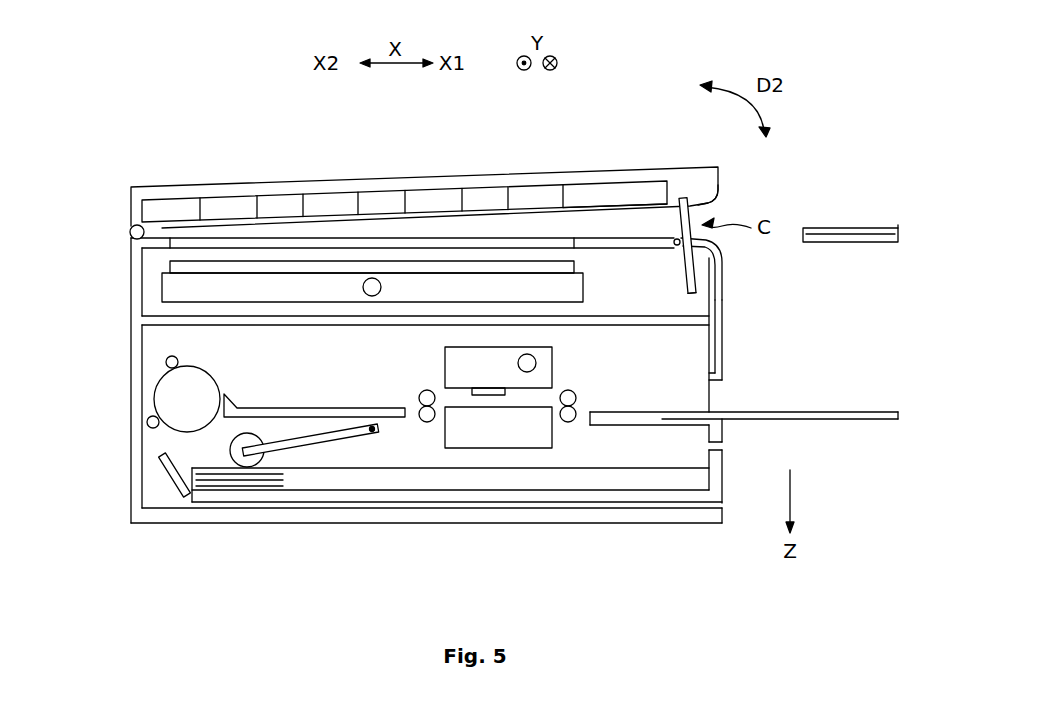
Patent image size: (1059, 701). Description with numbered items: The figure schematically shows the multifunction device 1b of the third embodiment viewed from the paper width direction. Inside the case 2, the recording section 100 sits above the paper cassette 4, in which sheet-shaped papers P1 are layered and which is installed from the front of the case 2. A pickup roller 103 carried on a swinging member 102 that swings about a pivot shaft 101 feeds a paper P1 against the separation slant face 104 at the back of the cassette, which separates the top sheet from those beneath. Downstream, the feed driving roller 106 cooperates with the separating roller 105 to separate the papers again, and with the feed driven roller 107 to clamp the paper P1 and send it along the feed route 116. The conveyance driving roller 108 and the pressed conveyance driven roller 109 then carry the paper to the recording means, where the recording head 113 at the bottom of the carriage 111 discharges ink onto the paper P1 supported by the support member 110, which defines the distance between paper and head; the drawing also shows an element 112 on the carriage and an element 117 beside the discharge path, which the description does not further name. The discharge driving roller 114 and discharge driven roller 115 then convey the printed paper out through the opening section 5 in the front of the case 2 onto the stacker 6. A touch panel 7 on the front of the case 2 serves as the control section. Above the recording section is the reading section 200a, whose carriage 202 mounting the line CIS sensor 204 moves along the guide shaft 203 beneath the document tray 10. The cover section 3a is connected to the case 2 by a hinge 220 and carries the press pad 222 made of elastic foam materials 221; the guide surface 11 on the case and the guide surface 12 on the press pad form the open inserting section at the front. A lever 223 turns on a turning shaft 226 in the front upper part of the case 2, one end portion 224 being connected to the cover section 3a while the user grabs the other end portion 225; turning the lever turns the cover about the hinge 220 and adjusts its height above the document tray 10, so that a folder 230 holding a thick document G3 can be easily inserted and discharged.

The multifunction device 1b is at (631, 88).
The case 2 is at (140, 519).
The cover section 3a is at (193, 190).
The paper cassette 4 is at (678, 509).
The opening section 5 is at (715, 386).
The stacker 6 is at (853, 411).
The touch panel 7 is at (718, 337).
The document tray 10 is at (387, 247).
The guide surface 11 is at (710, 248).
The guide surface 12 is at (708, 200).
The recording section 100 is at (98, 322).
The pivot shaft 101 is at (370, 433).
The swinging member 102 is at (308, 445).
The pickup roller 103 is at (245, 464).
The separation slant face 104 is at (175, 485).
The separating roller 105 is at (155, 428).
The feed driving roller 106 is at (207, 392).
The feed driven roller 107 is at (177, 358).
The conveyance driving roller 108 is at (425, 423).
The conveyance driven roller 109 is at (425, 391).
The support member 110 is at (475, 448).
The carriage 111 is at (549, 376).
The guide rail 112 is at (536, 363).
The recording head 113 is at (493, 394).
The discharge driving roller 114 is at (565, 422).
The discharge driven roller 115 is at (576, 405).
The feed route 116 is at (327, 412).
The discharge plate 117 is at (637, 418).
The reading section 200a is at (98, 183).
The carriage 202 is at (583, 290).
The guide shaft 203 is at (382, 287).
The line CIS sensor 204 is at (574, 262).
The hinge 220 is at (130, 230).
The elastic foam materials 221 is at (245, 203).
The press pad 222 is at (575, 203).
The lever 223 is at (667, 222).
The end portion 224 is at (692, 192).
The end portion 225 is at (697, 285).
The turning shaft 226 is at (700, 283).
The folder 230 is at (825, 228).
The document G3 is at (876, 237).
The paper P1 is at (637, 484).